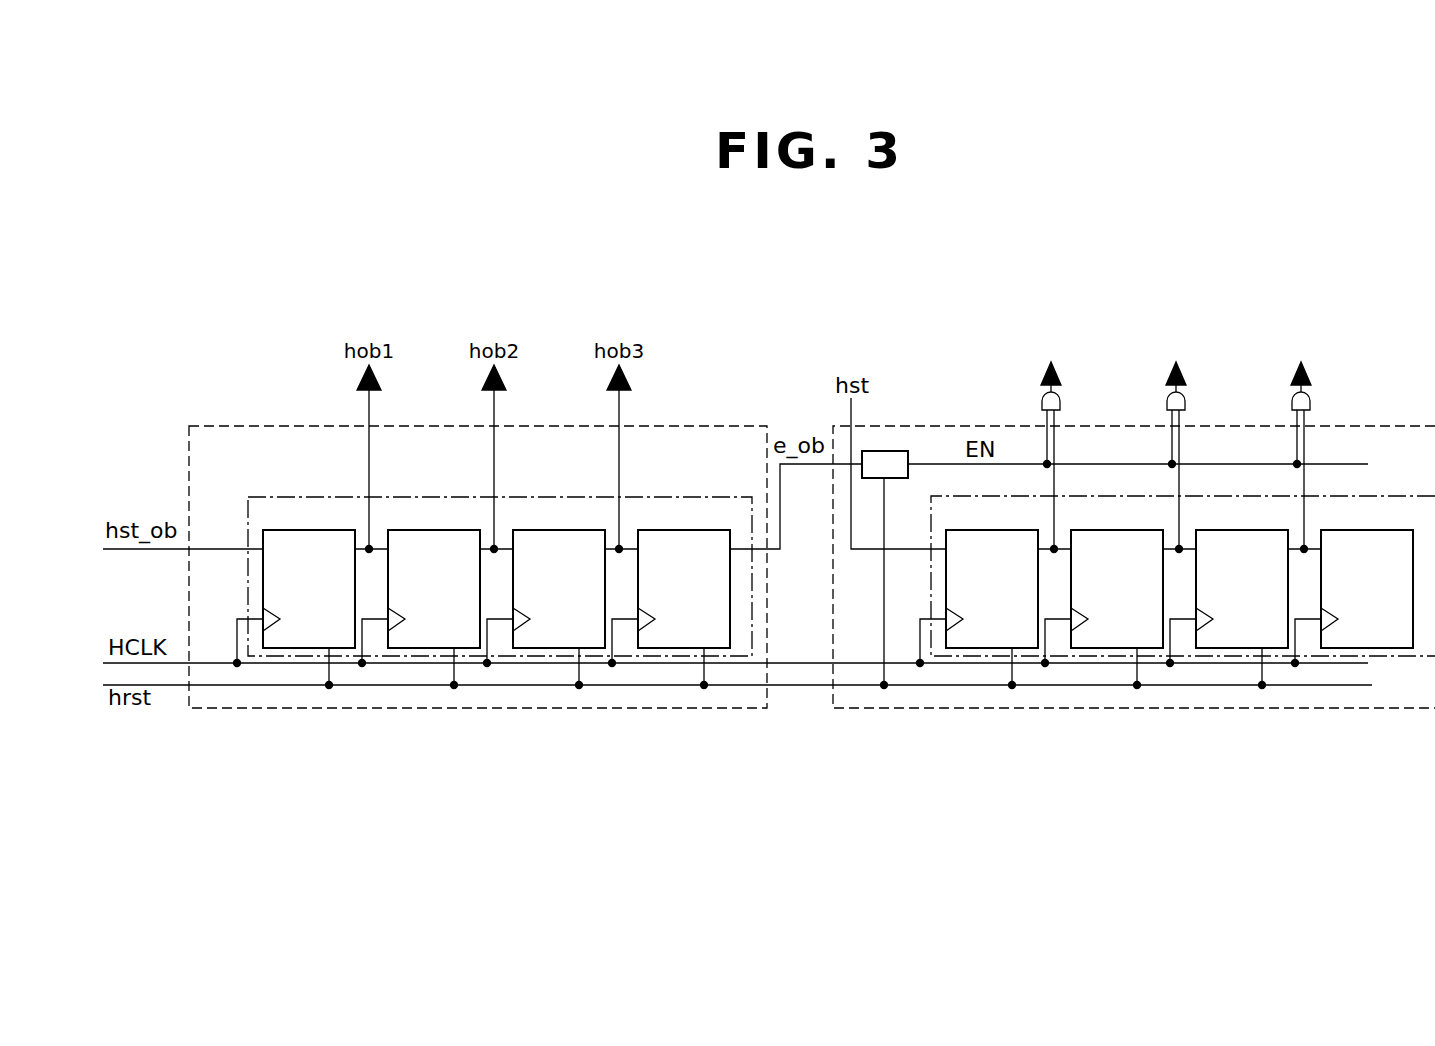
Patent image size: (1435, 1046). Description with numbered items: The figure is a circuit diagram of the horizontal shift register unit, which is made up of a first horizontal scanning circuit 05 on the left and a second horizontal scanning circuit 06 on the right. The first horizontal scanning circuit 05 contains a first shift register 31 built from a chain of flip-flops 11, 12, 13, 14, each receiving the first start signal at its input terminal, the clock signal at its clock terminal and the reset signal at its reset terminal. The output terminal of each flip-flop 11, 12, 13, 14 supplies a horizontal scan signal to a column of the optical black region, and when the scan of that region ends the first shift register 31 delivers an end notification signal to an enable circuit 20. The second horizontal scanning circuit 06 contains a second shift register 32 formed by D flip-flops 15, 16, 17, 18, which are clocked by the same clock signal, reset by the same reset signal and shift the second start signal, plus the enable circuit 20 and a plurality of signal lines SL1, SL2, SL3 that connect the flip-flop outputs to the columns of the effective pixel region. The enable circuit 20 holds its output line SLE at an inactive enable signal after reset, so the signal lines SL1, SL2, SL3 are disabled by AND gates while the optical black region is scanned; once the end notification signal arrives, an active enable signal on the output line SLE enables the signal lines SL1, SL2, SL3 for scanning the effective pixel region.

The first horizontal scanning circuit 05 is at (488, 725).
The second horizontal scanning circuit 06 is at (1120, 725).
The flip-flop 11 is at (295, 530).
The flip-flop 12 is at (420, 530).
The flip-flop 13 is at (545, 530).
The flip-flop 14 is at (670, 530).
The flip-flop 15 is at (978, 530).
The flip-flop 16 is at (1103, 530).
The flip-flop 17 is at (1228, 530).
The flip-flop 18 is at (1353, 530).
The enable circuit 20 is at (893, 451).
The first shift register 31 is at (320, 495).
The second shift register 32 is at (1413, 495).
The output line SLE is at (940, 452).
The signal line SL1 is at (1066, 443).
The signal line SL2 is at (1191, 443).
The signal line SL3 is at (1316, 443).